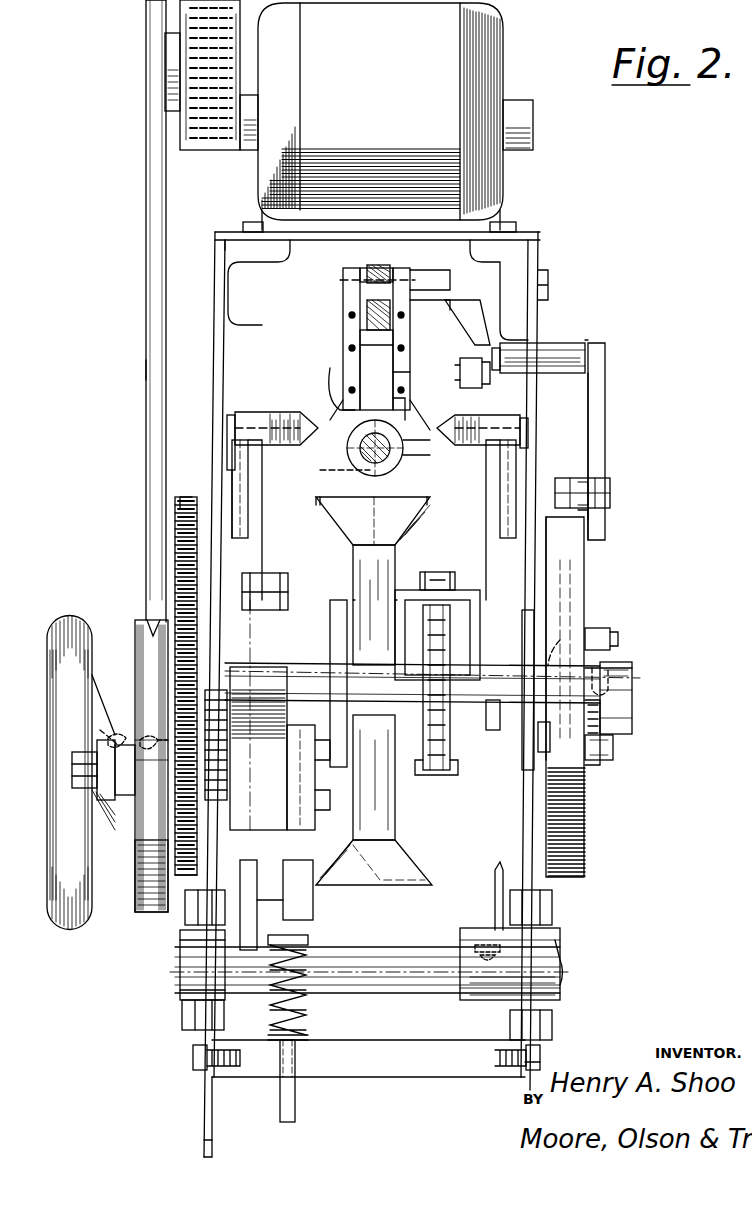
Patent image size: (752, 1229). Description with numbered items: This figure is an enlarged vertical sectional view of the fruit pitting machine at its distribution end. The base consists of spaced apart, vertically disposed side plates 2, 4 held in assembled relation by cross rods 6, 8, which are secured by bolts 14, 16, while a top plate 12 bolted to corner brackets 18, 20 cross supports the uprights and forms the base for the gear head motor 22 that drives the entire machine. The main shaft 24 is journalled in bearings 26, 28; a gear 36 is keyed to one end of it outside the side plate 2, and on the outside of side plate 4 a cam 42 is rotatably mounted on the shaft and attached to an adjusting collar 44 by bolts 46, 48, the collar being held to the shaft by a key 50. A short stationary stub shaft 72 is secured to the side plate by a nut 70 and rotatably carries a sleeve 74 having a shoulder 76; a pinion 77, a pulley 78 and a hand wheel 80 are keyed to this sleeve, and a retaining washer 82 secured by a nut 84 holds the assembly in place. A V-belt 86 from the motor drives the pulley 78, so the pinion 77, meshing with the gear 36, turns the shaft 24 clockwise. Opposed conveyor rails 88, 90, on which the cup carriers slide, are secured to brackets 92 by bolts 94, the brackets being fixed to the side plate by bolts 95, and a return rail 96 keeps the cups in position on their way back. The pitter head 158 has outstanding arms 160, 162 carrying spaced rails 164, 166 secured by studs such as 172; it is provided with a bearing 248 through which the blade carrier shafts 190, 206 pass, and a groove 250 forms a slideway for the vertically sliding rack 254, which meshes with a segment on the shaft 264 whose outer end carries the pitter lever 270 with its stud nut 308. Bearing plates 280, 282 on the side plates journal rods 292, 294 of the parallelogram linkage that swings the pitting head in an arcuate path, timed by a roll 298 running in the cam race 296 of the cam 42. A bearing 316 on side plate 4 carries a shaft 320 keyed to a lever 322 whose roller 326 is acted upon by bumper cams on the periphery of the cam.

The side plate 2 is at (240, 855).
The side plate 4 is at (548, 288).
The cross rod 6 is at (357, 1072).
The cross rod 8 is at (406, 968).
The top plate 12 is at (310, 240).
The bolt 14 is at (590, 1040).
The bolt 16 is at (193, 1060).
The corner bracket 18 is at (230, 302).
The corner bracket 20 is at (545, 258).
The gear head motor 22 is at (477, 52).
The shaft 24 is at (635, 695).
The bearing 26 is at (175, 620).
The bearing 28 is at (528, 618).
The gear 36 is at (147, 480).
The cam 42 is at (650, 864).
The adjusting collar 44 is at (668, 778).
The bolt 46 is at (614, 746).
The bolt 48 is at (612, 638).
The key 50 is at (615, 672).
The nut 70 is at (235, 760).
The stub shaft 72 is at (95, 772).
The sleeve 74 is at (112, 738).
The shoulder 76 is at (200, 815).
The pinion 77 is at (178, 878).
The pulley 78 is at (135, 908).
The hand wheel 80 is at (68, 926).
The retaining washer 82 is at (85, 742).
The nut 84 is at (85, 790).
The V-belt 86 is at (148, 40).
The rail 88 is at (400, 598).
The rail 90 is at (462, 612).
The bracket 92 is at (465, 592).
The bolt 94 is at (400, 676).
The bolt 95 is at (488, 722).
The return rail 96 is at (340, 768).
The pitter head 158 is at (330, 368).
The arm 160 is at (305, 450).
The arm 162 is at (402, 455).
The rail 164 is at (280, 414).
The rail 166 is at (462, 446).
The stud 172 is at (522, 432).
The shaft 190 is at (372, 460).
The shaft 206 is at (460, 432).
The bearing 248 is at (385, 472).
The groove 250 is at (408, 346).
The rack 254 is at (406, 375).
The shaft 264 is at (345, 292).
The pitter lever 270 is at (433, 305).
The bearing plate 280 is at (180, 987).
The bearing plate 282 is at (560, 992).
The rod 292 is at (248, 872).
The rod 294 is at (505, 893).
The cam race 296 is at (572, 567).
The roll 298 is at (560, 640).
The nut 308 is at (463, 386).
The bearing 316 is at (552, 348).
The shaft 320 is at (575, 355).
The lever 322 is at (606, 399).
The roller 326 is at (577, 476).